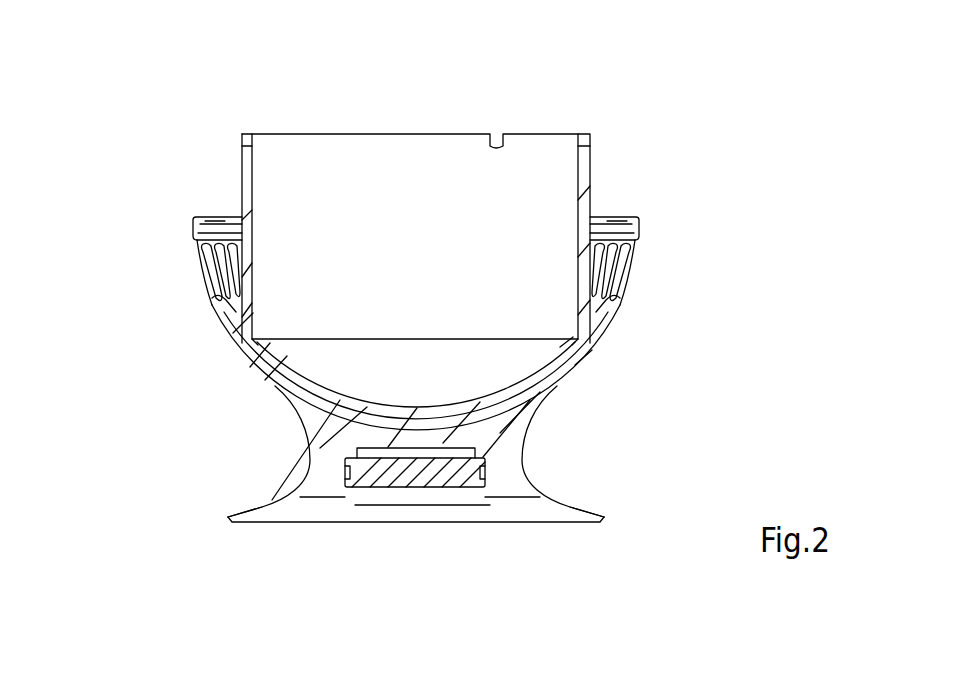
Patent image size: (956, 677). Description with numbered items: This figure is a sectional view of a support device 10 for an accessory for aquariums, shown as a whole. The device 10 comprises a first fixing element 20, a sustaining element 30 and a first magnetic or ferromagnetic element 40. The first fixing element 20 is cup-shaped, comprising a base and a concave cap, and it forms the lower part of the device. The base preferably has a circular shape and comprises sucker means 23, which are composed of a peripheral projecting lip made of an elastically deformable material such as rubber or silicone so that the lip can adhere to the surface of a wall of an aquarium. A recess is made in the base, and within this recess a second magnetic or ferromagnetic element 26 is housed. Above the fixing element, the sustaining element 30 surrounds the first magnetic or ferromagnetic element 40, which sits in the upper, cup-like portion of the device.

The support device 10 is at (141, 137).
The first fixing element 20 is at (300, 426).
The sucker means 23 is at (226, 513).
The second magnetic or ferromagnetic element 26 is at (478, 461).
The sustaining element 30 is at (198, 193).
The first magnetic or ferromagnetic element 40 is at (523, 368).